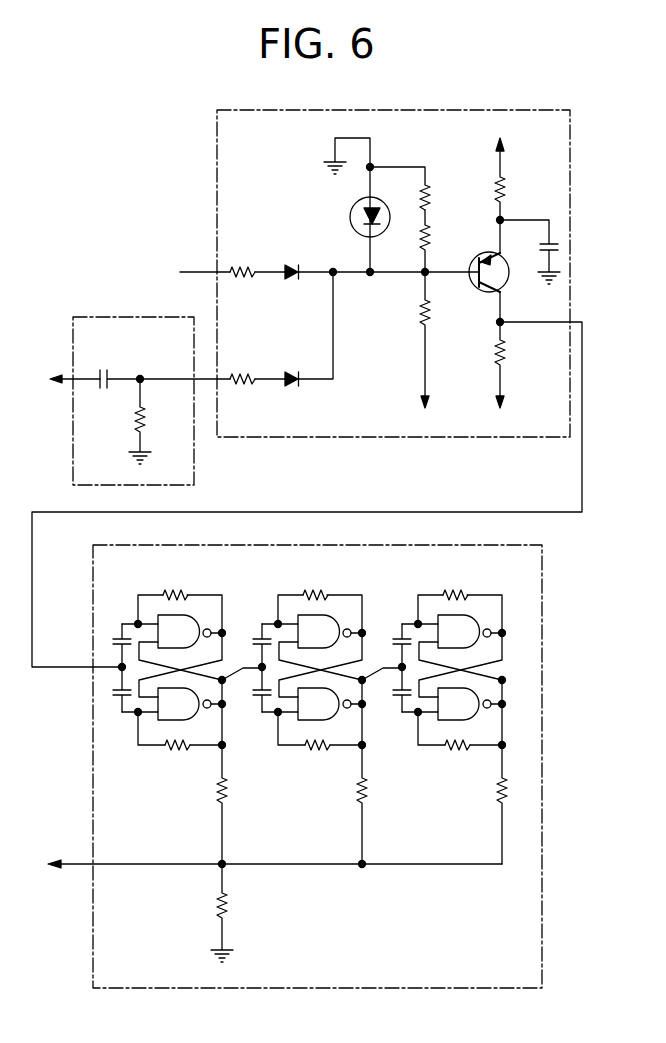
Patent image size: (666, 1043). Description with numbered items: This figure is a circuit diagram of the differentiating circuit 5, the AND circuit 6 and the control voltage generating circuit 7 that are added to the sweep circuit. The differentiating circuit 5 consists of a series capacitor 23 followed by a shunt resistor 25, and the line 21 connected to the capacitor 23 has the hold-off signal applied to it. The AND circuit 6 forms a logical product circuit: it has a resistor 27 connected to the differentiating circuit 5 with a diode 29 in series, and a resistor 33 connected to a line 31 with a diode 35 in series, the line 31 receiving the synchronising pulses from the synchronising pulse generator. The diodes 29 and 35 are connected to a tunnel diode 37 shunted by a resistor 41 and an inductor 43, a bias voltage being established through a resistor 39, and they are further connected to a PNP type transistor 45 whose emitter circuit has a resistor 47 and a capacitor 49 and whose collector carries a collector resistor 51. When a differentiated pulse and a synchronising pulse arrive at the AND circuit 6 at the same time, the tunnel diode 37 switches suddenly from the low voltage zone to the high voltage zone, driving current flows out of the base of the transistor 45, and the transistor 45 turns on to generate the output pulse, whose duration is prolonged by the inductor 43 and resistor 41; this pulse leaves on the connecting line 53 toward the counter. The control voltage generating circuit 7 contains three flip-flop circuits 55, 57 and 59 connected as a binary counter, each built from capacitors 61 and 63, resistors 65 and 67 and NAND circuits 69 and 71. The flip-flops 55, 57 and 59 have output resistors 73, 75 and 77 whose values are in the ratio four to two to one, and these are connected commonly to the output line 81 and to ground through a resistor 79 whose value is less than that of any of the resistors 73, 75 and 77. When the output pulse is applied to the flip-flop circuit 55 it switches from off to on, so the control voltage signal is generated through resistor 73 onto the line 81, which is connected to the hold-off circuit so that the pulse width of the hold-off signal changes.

The differentiating circuit 5 is at (118, 316).
The AND circuit 6 is at (215, 142).
The control voltage generating circuit 7 is at (542, 561).
The line 21 is at (64, 378).
The series capacitor 23 is at (109, 374).
The shunt resistor 25 is at (134, 417).
The resistor 27 is at (243, 373).
The diode 29 is at (293, 372).
The line 31 is at (197, 270).
The resistor 33 is at (244, 266).
The diode 35 is at (295, 266).
The tunnel diode 37 is at (350, 216).
The resistor 39 is at (420, 318).
The resistor 41 is at (429, 235).
The inductor 43 is at (429, 194).
The PNP type transistor 45 is at (474, 290).
The resistor 47 is at (504, 185).
The capacitor 49 is at (540, 250).
The collector resistor 51 is at (504, 349).
The connecting line 53 is at (564, 510).
The flip-flop circuit 55 is at (222, 593).
The flip-flop circuit 57 is at (342, 593).
The flip-flop circuit 59 is at (502, 593).
The capacitor 61 is at (118, 634).
The capacitor 63 is at (120, 705).
The resistor 65 is at (174, 593).
The resistor 67 is at (177, 753).
The NAND circuit 69 is at (183, 614).
The NAND circuit 71 is at (186, 720).
The output resistor 73 is at (225, 793).
The output resistor 75 is at (365, 793).
The output resistor 77 is at (505, 793).
The resistor 79 is at (225, 908).
The output line 81 is at (61, 868).